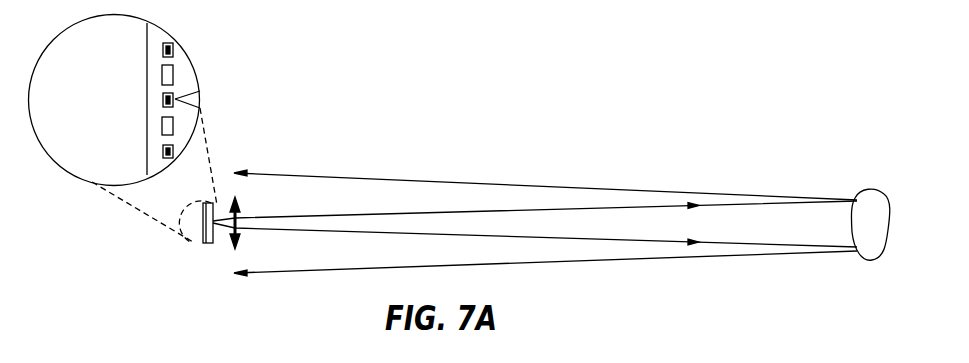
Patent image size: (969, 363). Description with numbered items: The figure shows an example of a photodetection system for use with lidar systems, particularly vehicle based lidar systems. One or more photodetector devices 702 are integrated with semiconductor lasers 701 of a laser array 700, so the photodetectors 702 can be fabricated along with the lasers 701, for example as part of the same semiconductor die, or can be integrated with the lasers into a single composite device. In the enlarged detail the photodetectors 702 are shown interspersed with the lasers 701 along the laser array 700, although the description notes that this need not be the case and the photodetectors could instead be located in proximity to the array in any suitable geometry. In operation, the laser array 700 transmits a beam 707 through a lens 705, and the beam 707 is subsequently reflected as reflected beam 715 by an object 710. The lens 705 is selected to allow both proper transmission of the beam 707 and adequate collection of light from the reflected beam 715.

The laser array 700 is at (203, 243).
The semiconductor lasers 701 is at (163, 50).
The photodetector devices 702 is at (163, 128).
The lens 705 is at (232, 246).
The beam 707 is at (730, 203).
The object 710 is at (872, 192).
The reflected beam 715 is at (470, 183).